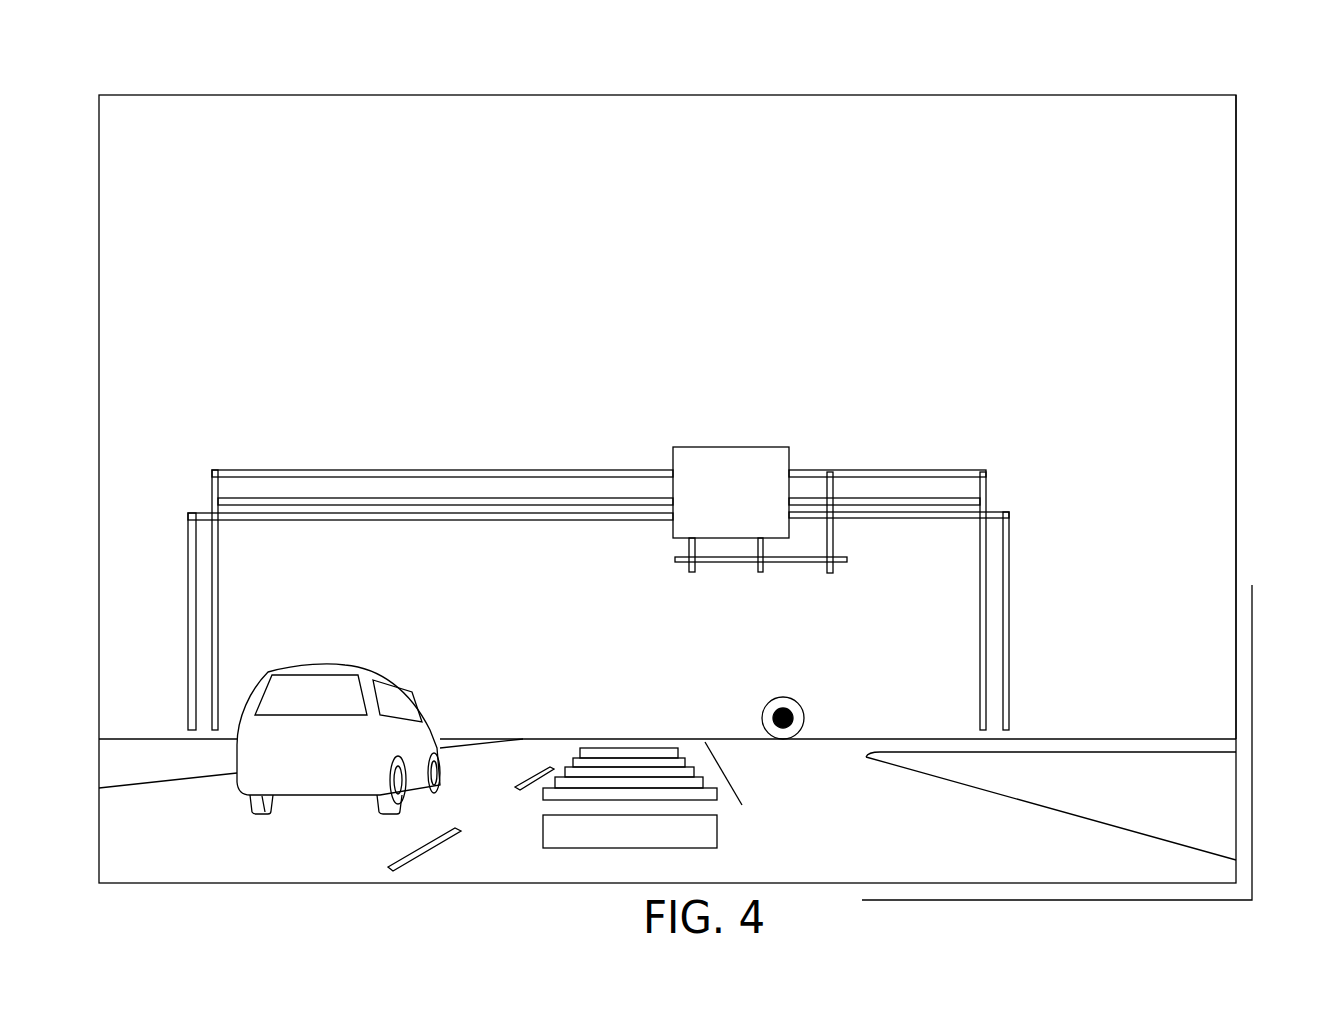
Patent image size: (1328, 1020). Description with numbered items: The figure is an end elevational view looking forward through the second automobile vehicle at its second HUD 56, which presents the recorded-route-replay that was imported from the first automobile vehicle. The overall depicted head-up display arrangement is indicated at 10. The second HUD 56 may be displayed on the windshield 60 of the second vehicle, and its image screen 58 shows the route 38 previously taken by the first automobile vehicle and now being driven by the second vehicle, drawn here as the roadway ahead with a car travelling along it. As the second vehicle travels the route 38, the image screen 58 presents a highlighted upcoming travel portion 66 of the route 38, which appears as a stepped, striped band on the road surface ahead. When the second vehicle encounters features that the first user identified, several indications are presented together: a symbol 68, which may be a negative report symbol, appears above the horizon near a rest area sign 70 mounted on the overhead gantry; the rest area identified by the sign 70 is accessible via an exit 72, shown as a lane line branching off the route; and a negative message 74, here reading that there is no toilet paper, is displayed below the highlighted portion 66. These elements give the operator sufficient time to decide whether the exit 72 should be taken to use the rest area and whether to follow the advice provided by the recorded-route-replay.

The display image 10 is at (1110, 80).
The second HUD 56 is at (1246, 140).
The image screen 58 is at (1218, 322).
The windshield 60 is at (1243, 800).
The route 38 is at (502, 865).
The highlighted upcoming travel portion 66 is at (602, 775).
The symbol 68 is at (798, 713).
The rest area sign 70 is at (737, 460).
The exit 72 is at (745, 758).
The negative message 74 is at (593, 835).